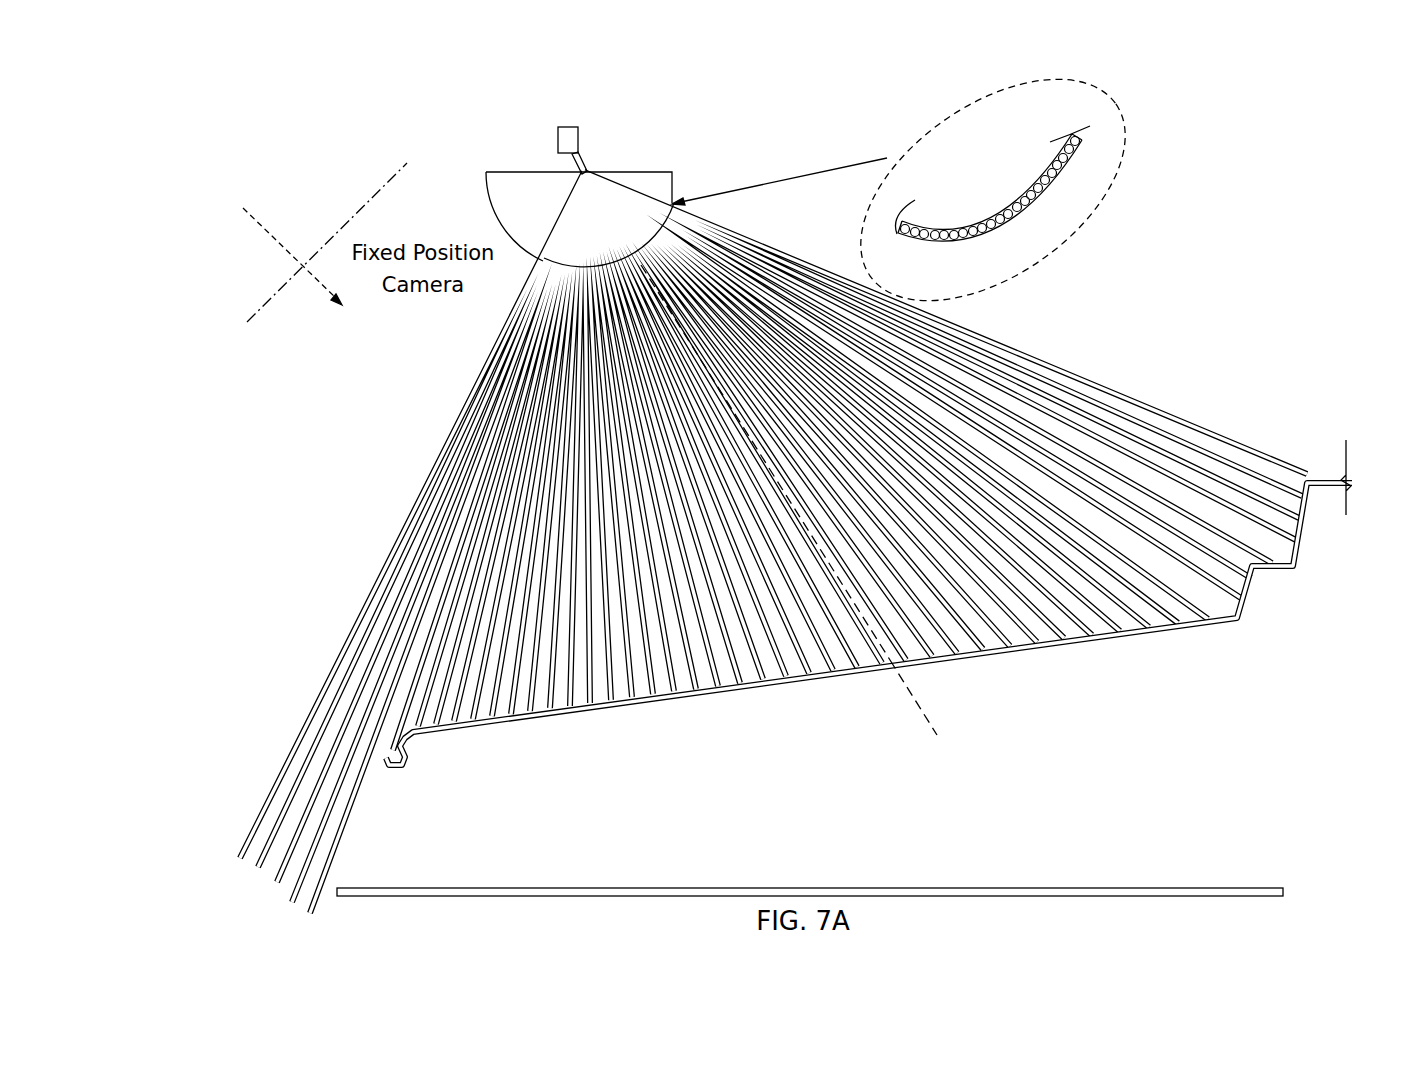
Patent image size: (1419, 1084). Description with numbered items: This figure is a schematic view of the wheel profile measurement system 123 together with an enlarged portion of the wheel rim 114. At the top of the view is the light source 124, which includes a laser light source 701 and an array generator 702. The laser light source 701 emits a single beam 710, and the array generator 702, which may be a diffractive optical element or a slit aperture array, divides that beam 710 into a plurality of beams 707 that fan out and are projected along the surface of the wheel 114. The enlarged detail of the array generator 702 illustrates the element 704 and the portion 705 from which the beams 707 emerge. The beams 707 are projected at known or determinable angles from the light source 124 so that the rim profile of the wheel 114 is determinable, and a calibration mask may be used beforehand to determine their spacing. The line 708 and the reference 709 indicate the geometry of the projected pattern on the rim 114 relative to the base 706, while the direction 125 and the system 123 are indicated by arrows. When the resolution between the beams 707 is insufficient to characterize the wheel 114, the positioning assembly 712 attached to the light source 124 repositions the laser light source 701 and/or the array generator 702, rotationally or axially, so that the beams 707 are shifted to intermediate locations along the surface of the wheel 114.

The wheel rim 114 is at (1240, 618).
The wheel profile measurement system 123 is at (305, 330).
The light source 124 is at (655, 158).
The axis 125 is at (260, 222).
The laser light source 701 is at (578, 155).
The array generator 702 is at (676, 190).
The optical fibers 704 is at (992, 230).
The bundle end face 705 is at (782, 168).
The base plate 706 is at (455, 897).
The beams 707 is at (1145, 402).
The reference line 708 is at (890, 656).
The centerline 709 is at (925, 722).
The beam 710 is at (556, 240).
The positioning assembly 712 is at (556, 137).